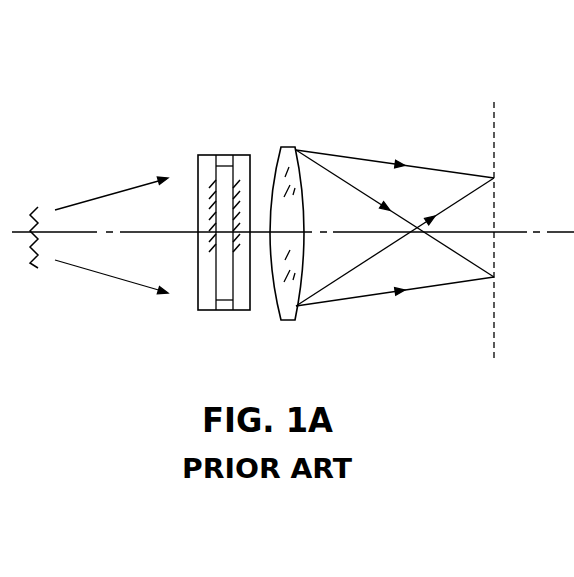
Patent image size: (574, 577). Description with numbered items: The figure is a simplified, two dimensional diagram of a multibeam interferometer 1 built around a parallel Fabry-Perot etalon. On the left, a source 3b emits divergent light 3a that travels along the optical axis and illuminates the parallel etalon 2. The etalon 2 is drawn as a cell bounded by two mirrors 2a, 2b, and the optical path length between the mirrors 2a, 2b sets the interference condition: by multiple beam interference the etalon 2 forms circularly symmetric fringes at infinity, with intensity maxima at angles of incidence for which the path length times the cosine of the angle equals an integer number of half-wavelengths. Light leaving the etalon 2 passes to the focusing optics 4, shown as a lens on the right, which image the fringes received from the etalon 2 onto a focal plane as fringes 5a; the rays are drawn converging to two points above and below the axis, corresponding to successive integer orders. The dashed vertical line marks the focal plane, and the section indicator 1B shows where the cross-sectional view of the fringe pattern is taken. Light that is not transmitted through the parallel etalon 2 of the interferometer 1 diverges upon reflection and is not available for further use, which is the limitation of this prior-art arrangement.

The multibeam interferometer 1 is at (121, 49).
The parallel etalon 2 is at (216, 134).
The mirror 2a is at (205, 310).
The mirror 2b is at (242, 310).
The divergent light 3a is at (84, 181).
The source 3b is at (37, 211).
The focusing optics 4 is at (288, 146).
The fringes 5a is at (494, 178).
The section line of FIG. 1B is at (484, 118).